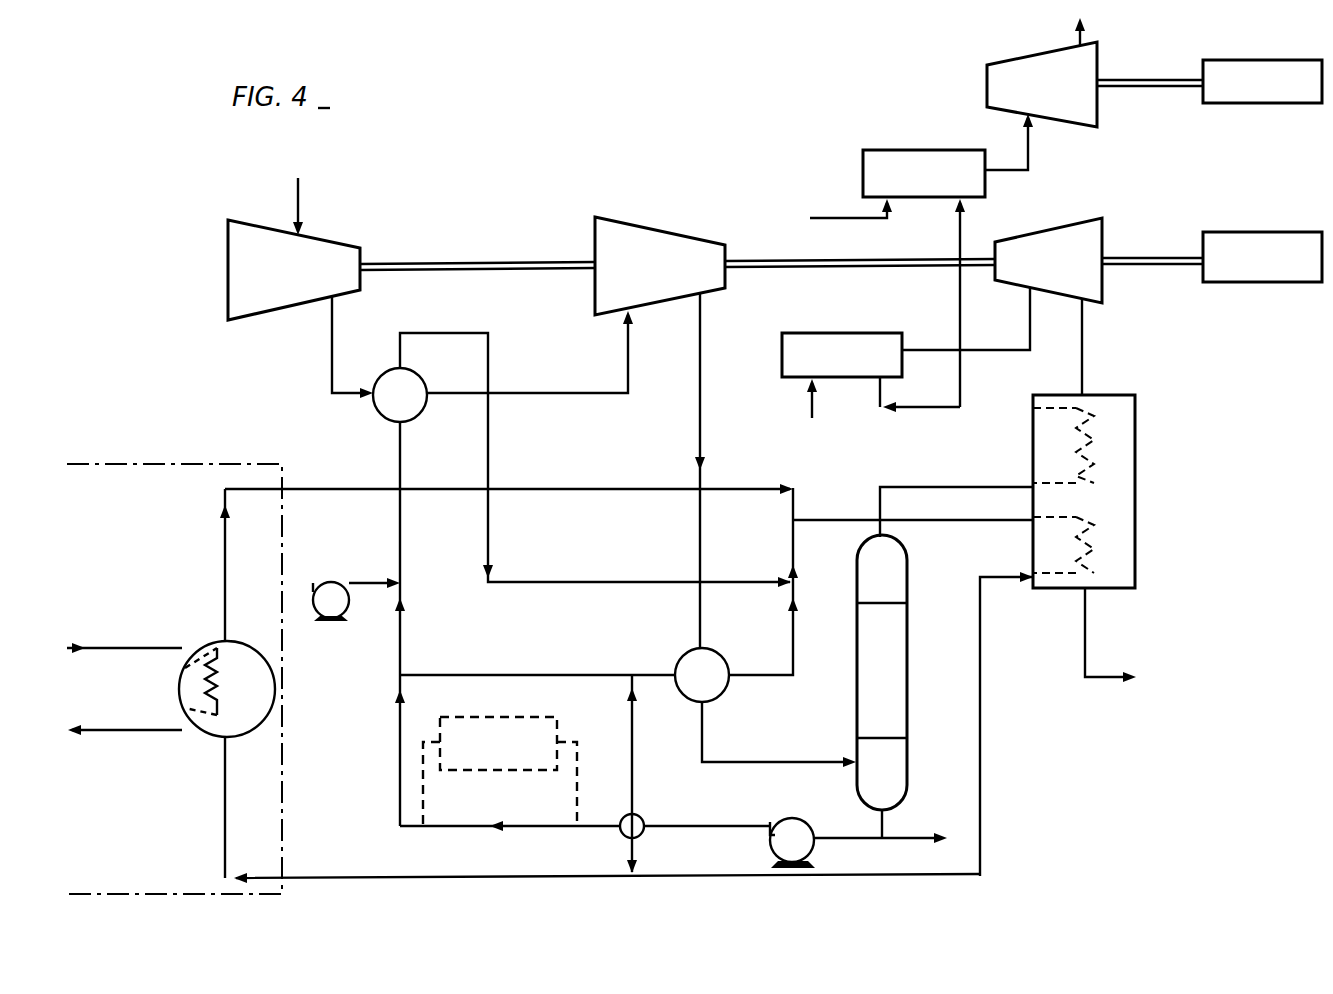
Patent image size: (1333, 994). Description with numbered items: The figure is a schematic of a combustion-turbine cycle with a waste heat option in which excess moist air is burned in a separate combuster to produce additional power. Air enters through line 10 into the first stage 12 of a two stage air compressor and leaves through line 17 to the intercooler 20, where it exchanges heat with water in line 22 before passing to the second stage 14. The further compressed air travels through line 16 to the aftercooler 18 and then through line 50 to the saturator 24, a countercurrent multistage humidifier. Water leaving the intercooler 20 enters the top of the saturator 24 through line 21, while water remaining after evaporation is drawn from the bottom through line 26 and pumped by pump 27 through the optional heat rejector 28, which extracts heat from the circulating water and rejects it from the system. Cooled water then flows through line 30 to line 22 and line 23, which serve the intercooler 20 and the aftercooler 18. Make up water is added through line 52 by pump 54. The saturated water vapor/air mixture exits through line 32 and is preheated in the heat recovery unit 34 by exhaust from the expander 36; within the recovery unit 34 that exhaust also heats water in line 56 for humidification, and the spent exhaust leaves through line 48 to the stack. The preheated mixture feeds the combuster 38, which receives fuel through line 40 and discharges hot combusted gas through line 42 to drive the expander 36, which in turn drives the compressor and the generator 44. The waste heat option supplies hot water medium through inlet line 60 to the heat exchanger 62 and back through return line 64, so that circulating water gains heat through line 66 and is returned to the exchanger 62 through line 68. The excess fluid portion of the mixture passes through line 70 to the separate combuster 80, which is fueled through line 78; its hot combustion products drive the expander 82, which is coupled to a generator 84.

The air line 10 is at (302, 205).
The first stage 12 is at (228, 240).
The second stage 14 is at (680, 230).
The line 16 is at (701, 365).
The line 17 is at (330, 323).
The aftercooler 18 is at (720, 650).
The intercooler 20 is at (386, 370).
The line 21 is at (605, 582).
The line 22 is at (403, 537).
The line 23 is at (555, 675).
The saturator 24 is at (626, 354).
The line 26 is at (885, 826).
The pump 27 is at (808, 792).
The heat rejector 28 is at (553, 716).
The line 30 is at (400, 741).
The line 32 is at (944, 487).
The heat recovery unit 34 is at (1136, 428).
The expander 36 is at (1068, 225).
The combuster 38 is at (866, 333).
The line 40 is at (810, 408).
The line 42 is at (1006, 350).
The generator 44 is at (1262, 232).
The line 48 is at (1087, 630).
The line 50 is at (705, 732).
The line 52 is at (372, 590).
The pump 54 is at (340, 582).
The line 56 is at (845, 518).
The hot water medium inlet line 60 is at (158, 646).
The heat exchanger 62 is at (228, 622).
The return line 64 is at (135, 733).
The line 66 is at (372, 489).
The line 68 is at (365, 876).
The line 70 is at (962, 388).
The line 78 is at (833, 218).
The combuster 80 is at (930, 150).
The expander 82 is at (994, 62).
The generator 84 is at (1272, 104).